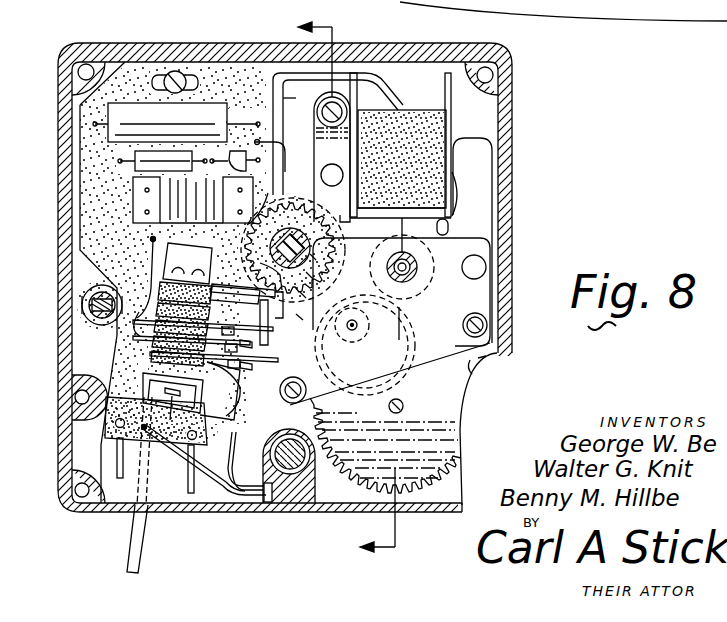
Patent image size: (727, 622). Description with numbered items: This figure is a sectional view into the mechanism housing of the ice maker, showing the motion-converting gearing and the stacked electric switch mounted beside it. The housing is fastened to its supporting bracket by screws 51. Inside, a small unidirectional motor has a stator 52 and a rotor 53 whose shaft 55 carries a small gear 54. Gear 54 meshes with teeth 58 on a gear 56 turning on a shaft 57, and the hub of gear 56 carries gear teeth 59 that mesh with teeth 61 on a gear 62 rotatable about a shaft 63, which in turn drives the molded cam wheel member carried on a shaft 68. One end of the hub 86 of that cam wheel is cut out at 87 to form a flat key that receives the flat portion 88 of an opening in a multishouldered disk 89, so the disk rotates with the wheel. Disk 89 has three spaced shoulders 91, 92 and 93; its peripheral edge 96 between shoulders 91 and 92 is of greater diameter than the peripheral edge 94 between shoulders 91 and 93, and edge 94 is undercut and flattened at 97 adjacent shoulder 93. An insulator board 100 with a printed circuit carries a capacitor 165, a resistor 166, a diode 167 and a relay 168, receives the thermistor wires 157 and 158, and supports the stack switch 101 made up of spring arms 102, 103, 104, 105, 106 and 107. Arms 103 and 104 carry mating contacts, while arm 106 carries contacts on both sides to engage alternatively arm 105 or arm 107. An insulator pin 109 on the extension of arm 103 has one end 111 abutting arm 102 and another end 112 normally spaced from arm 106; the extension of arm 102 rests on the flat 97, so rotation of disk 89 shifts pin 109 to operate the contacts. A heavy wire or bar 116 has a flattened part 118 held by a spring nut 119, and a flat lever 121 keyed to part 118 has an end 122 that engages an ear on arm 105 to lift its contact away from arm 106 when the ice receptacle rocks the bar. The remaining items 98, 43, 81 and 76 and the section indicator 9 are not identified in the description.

The housing wall 98 is at (109, 57).
The screws 51 is at (78, 397).
The insulator board 100 is at (88, 224).
The capacitor 165 is at (108, 108).
The resistor 166 is at (143, 163).
The diode 167 is at (238, 150).
The relay 168 is at (143, 197).
The peripheral edge 94 is at (248, 228).
The undercut flat portion 97 is at (260, 263).
The pin end 111 is at (275, 288).
The shoulder 91 is at (300, 170).
The insulated wire 158 is at (285, 150).
The peripheral edge 96 is at (315, 158).
The section line 9 is at (349, 297).
The stator 52 is at (428, 130).
The shoulder 92 is at (392, 187).
The small gear 54 is at (428, 262).
The shaft 55 is at (407, 277).
The rotor 53 is at (412, 272).
The hub 86 is at (297, 233).
The shaft 68 is at (334, 248).
The cut-out key portion 87 is at (313, 257).
The flat portion 88 is at (310, 275).
The multishouldered disk 89 is at (303, 295).
The shoulder 93 is at (300, 317).
The gear teeth 59 is at (357, 327).
The shaft 57 is at (358, 330).
The insulator pin 109 is at (300, 336).
The teeth 58 is at (300, 352).
The gear 56 is at (410, 353).
The teeth 61 is at (480, 358).
The gear 62 is at (437, 465).
The shaft 63 is at (401, 413).
The bearing boss 43 is at (301, 478).
The pinion 81 is at (300, 452).
The insulated wire 157 is at (210, 497).
The stack switch 101 is at (158, 286).
The spring arm 102 is at (217, 273).
The spring arm 104 is at (220, 323).
The spring arm 103 is at (226, 303).
The spring arm 105 is at (137, 327).
The spring arm 106 is at (155, 345).
The spring arm 107 is at (155, 357).
The pin end 112 is at (247, 347).
The lever end 122 is at (247, 364).
The spring nut 119 is at (210, 396).
The flat lever 121 is at (283, 395).
The flattened part 118 is at (143, 430).
The wire or bar 116 is at (137, 560).
The bushing 76 is at (90, 303).